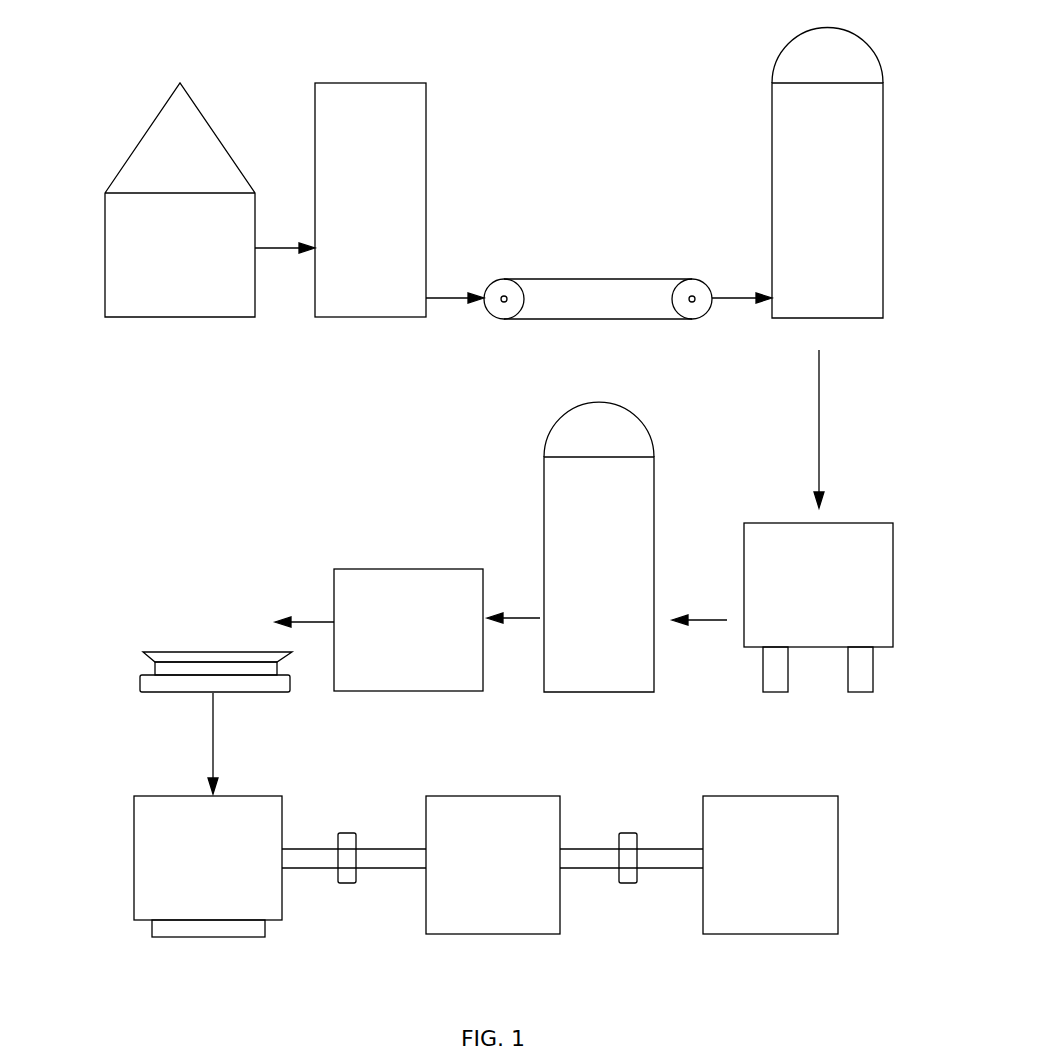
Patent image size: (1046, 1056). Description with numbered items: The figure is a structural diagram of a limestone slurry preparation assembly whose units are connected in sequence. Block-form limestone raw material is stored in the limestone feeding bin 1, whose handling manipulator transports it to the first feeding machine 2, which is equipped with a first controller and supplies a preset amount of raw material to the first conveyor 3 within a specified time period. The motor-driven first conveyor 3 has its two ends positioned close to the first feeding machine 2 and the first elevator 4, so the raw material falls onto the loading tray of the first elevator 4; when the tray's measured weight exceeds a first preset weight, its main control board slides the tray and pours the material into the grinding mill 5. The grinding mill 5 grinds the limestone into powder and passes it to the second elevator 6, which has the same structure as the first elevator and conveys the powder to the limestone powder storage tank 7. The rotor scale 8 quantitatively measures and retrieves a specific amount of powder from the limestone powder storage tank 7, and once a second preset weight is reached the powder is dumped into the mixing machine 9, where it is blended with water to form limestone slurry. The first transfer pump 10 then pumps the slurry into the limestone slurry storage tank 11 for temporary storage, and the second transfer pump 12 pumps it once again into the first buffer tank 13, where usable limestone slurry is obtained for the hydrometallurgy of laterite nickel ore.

The limestone feeding bin 1 is at (116, 278).
The first feeding machine 2 is at (420, 171).
The first conveyor 3 is at (600, 279).
The first elevator 4 is at (875, 217).
The grinding mill 5 is at (887, 573).
The second elevator 6 is at (548, 478).
The limestone powder storage tank 7 is at (383, 582).
The rotor scale 8 is at (190, 655).
The mixing machine 9 is at (207, 903).
The first transfer pump 10 is at (348, 876).
The limestone slurry storage tank 11 is at (490, 917).
The second transfer pump 12 is at (631, 877).
The first buffer tank 13 is at (752, 917).